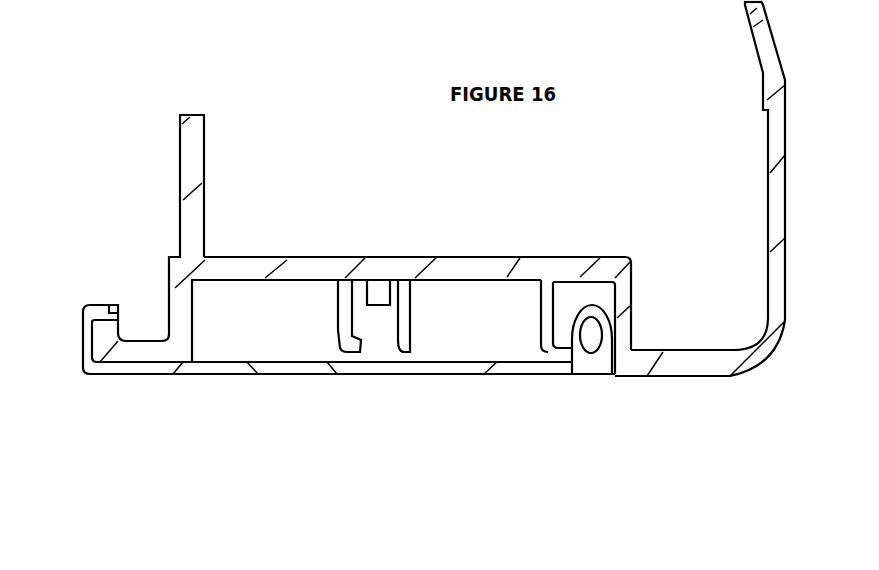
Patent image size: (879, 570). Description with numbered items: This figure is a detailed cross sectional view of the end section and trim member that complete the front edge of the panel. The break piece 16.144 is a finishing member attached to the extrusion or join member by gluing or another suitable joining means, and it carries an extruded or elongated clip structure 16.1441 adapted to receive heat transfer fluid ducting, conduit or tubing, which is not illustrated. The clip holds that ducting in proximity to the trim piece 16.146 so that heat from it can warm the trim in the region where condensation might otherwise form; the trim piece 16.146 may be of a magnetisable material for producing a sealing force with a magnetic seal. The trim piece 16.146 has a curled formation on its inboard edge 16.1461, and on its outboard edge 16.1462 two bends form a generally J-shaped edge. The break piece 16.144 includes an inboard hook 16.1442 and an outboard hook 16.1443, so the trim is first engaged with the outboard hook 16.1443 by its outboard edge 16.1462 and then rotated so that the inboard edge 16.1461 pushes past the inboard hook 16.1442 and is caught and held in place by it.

The break piece 16.144 is at (353, 252).
The clip structure 16.1441 is at (408, 320).
The inboard hook 16.1442 is at (547, 337).
The outboard hook 16.1443 is at (125, 322).
The trim piece 16.146 is at (272, 364).
The inboard edge 16.1461 is at (600, 325).
The outboard edge 16.1462 is at (97, 300).